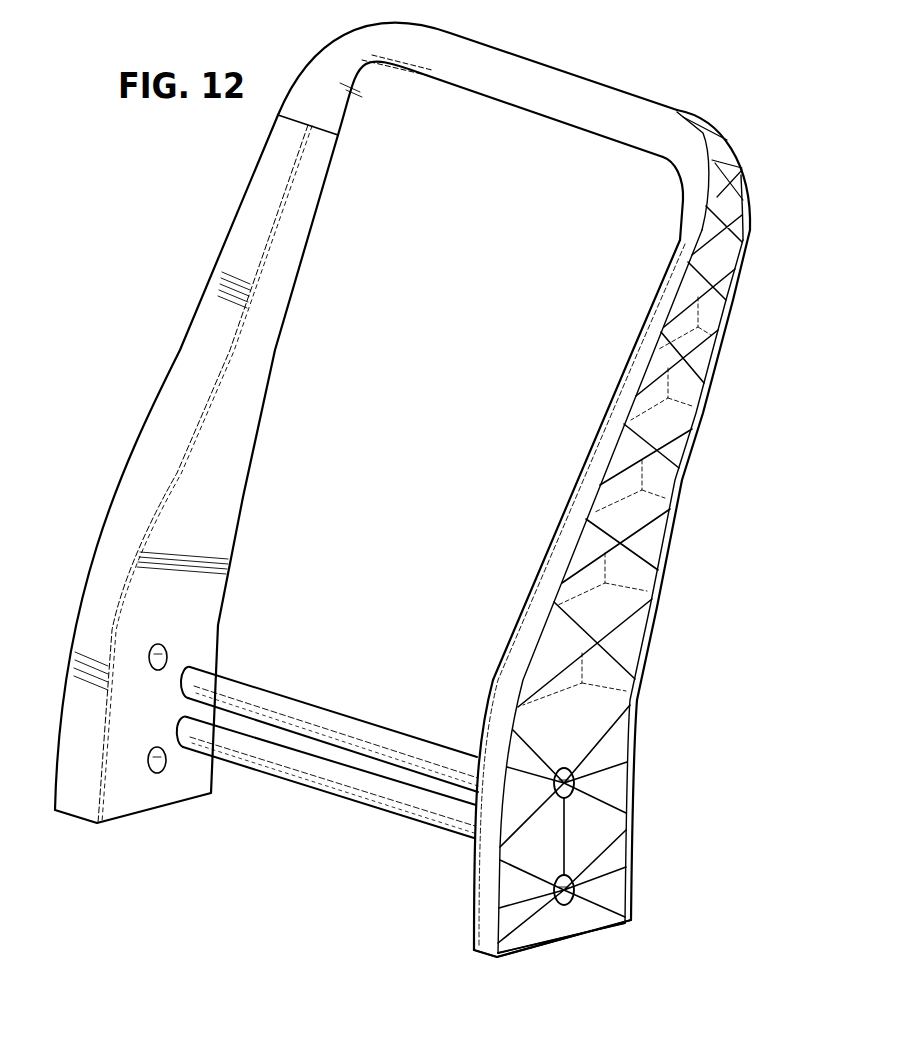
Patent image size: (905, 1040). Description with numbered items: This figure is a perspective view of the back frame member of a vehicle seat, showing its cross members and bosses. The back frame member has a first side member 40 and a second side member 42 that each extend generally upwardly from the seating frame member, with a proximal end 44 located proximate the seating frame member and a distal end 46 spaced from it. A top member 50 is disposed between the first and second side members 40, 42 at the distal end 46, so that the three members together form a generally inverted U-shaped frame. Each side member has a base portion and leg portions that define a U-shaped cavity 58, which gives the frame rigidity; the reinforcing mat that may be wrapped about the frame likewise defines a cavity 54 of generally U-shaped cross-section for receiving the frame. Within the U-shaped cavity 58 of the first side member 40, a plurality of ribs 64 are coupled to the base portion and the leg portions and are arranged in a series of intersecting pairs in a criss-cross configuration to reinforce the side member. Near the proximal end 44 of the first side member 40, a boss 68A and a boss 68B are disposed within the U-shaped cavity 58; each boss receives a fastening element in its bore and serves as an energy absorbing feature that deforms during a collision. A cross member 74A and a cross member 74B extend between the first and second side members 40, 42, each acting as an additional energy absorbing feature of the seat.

The first side member 40 is at (752, 305).
The second side member 42 is at (210, 226).
The proximal end 44 is at (657, 903).
The distal end 46 is at (764, 183).
The top member 50 is at (518, 72).
The cavity 54 is at (300, 205).
The U-shaped cavity 58 is at (603, 686).
The ribs 64 is at (673, 425).
The boss 68A is at (560, 870).
The boss 68B is at (567, 907).
The cross member 74A is at (337, 783).
The cross member 74B is at (307, 717).